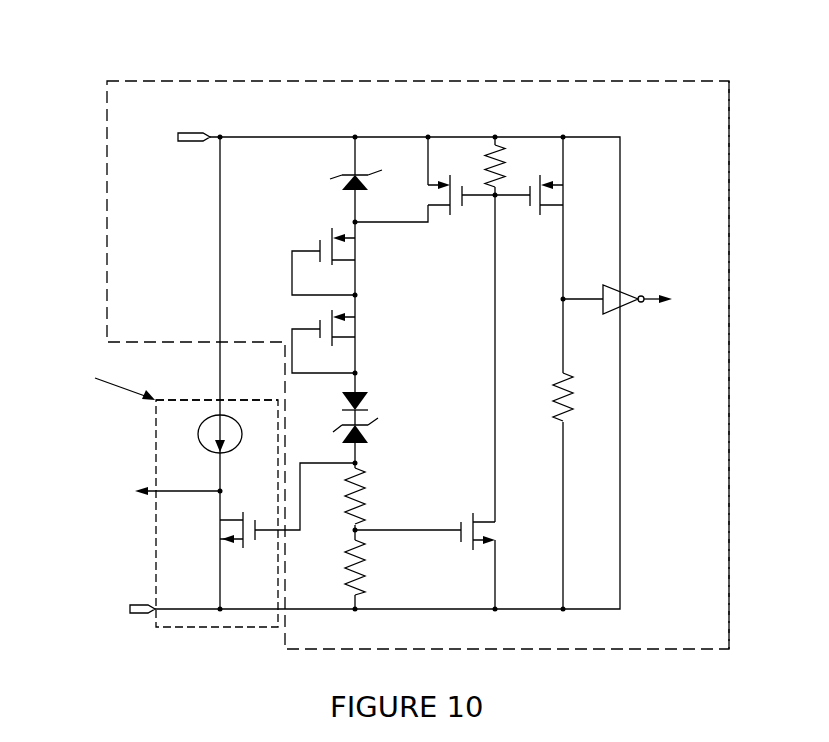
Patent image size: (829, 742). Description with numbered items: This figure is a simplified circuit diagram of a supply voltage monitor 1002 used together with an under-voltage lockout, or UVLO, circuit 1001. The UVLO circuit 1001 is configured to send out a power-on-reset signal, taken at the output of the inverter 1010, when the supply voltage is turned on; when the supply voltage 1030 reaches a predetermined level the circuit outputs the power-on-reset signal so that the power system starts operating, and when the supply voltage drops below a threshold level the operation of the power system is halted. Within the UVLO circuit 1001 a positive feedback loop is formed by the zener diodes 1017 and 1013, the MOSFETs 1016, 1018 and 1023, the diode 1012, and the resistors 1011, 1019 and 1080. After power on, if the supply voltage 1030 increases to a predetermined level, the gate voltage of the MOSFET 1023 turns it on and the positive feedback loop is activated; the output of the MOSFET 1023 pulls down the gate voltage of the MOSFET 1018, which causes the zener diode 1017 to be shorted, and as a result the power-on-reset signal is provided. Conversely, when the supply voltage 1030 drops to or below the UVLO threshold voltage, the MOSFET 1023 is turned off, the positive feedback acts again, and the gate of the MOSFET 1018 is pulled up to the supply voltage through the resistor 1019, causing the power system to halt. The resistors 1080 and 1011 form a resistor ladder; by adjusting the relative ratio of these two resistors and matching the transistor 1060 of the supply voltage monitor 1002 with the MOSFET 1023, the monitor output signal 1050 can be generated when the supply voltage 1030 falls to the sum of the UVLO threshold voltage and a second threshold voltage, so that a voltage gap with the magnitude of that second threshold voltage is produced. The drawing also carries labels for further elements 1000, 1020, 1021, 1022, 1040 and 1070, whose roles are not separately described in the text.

The integrated circuit device 1000 is at (703, 193).
The UVLO circuit 1001 is at (596, 81).
The supply voltage monitor 1002 is at (156, 456).
The inverter 1010 is at (624, 296).
The resistor 1011 is at (365, 567).
The diode 1012 is at (400, 406).
The zener diode 1013 is at (413, 436).
The MOSFET 1016 is at (380, 251).
The zener diode 1017 is at (300, 194).
The MOSFET 1018 is at (408, 186).
The resistor 1019 is at (511, 165).
The dashed block boundary 1020 is at (158, 399).
The transistor M4 1021 is at (535, 207).
The resistor R3 (lower) 1022 is at (546, 397).
The MOSFET 1023 is at (478, 552).
The VDD voltage 1030 is at (207, 135).
The VSS terminal 1040 is at (130, 620).
The VDD_Cout signal 1050 is at (132, 496).
The transistor 1060 is at (226, 521).
The current source 1070 is at (238, 449).
The resistor 1080 is at (365, 493).